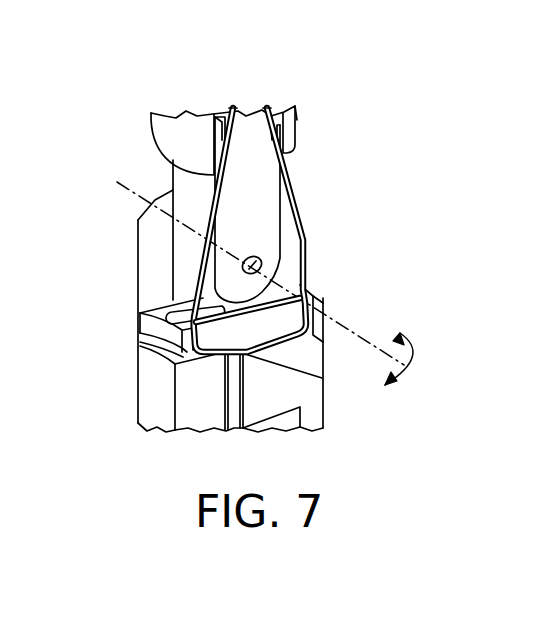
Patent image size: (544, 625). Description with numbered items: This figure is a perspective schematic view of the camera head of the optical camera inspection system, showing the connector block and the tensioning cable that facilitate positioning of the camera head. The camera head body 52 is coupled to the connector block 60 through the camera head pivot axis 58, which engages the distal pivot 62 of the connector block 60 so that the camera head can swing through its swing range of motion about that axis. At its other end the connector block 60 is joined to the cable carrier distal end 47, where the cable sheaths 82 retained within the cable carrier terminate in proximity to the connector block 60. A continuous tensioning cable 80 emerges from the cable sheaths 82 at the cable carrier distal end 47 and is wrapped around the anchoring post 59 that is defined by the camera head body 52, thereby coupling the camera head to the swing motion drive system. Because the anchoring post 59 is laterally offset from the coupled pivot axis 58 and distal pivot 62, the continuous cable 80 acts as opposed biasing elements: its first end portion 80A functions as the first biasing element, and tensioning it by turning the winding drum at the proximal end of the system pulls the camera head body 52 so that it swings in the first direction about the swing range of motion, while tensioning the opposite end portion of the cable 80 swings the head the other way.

The cable carrier distal end 47 is at (295, 133).
The camera head body 52 is at (138, 290).
The camera head pivot axis 58 is at (160, 197).
The anchoring post 59 is at (304, 330).
The connector block 60 is at (262, 200).
The distal pivot 62 is at (263, 264).
The continuous tensioning cable 80 is at (235, 352).
The first end portion 80A is at (300, 232).
The cable sheaths 82 is at (220, 113).